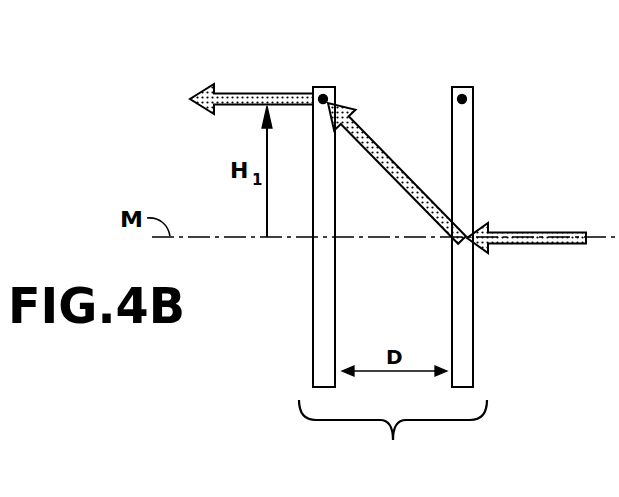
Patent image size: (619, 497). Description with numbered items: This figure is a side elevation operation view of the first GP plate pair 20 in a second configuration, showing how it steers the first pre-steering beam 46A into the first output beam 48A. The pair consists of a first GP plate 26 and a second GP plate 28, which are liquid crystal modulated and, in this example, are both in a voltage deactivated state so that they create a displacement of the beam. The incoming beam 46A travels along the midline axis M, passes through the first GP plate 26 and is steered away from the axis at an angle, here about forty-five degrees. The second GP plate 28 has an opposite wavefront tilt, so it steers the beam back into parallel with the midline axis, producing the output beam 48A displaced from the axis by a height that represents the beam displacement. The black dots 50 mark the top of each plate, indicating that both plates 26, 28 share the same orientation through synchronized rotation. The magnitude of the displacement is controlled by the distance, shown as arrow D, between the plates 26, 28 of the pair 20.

The first GP plate pair 20 is at (392, 280).
The first GP plate 26 is at (473, 360).
The second GP plate 28 is at (313, 360).
The top dot 50 is at (335, 99).
The first pre-steering beam 46A is at (532, 233).
The first output beam 48A is at (258, 93).